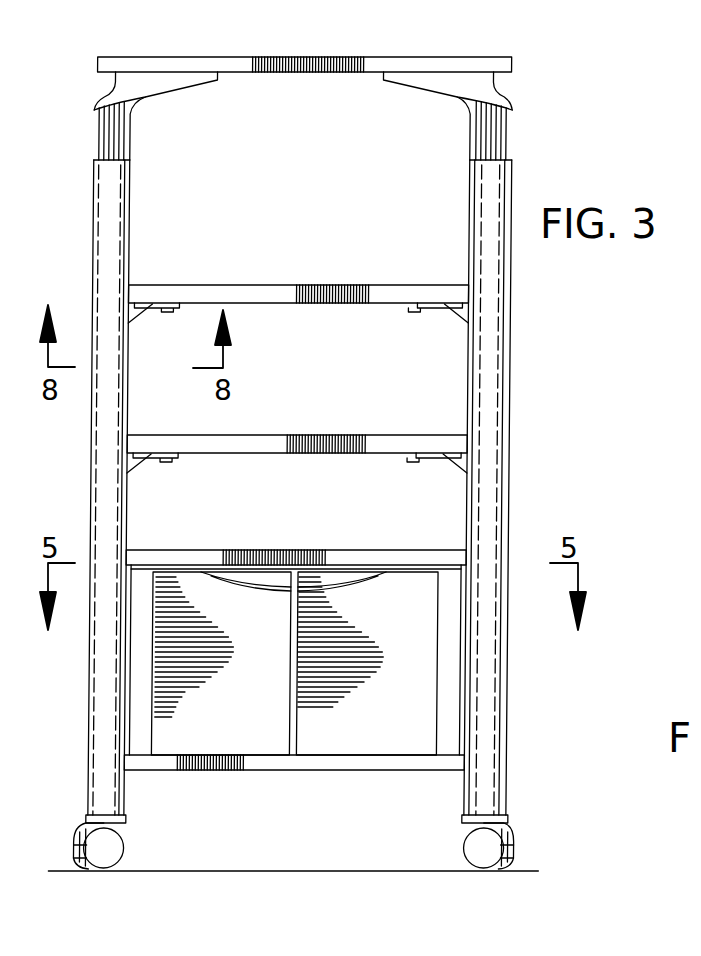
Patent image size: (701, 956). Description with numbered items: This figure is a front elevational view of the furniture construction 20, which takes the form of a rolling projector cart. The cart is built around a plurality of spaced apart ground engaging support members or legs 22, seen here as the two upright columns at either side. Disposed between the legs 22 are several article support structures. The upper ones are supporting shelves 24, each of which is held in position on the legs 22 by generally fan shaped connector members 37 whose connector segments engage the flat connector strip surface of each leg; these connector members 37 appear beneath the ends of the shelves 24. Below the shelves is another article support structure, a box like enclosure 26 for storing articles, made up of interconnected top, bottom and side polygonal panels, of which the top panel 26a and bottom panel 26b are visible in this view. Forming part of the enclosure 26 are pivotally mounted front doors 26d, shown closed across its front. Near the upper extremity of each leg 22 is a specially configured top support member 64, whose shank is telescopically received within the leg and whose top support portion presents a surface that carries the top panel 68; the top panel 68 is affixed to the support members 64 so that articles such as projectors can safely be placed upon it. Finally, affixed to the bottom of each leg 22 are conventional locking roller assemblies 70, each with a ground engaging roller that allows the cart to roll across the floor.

The furniture construction 20 is at (528, 145).
The support members 22 is at (131, 217).
The supporting shelves 24 is at (308, 285).
The box like enclosure 26 is at (240, 623).
The top panel 26a is at (351, 550).
The bottom panel 26b is at (188, 772).
The front doors 26d is at (315, 732).
The connector members 37 is at (136, 309).
The top support member 64 is at (157, 106).
The top panel 68 is at (305, 73).
The locking roller assemblies 70 is at (120, 848).